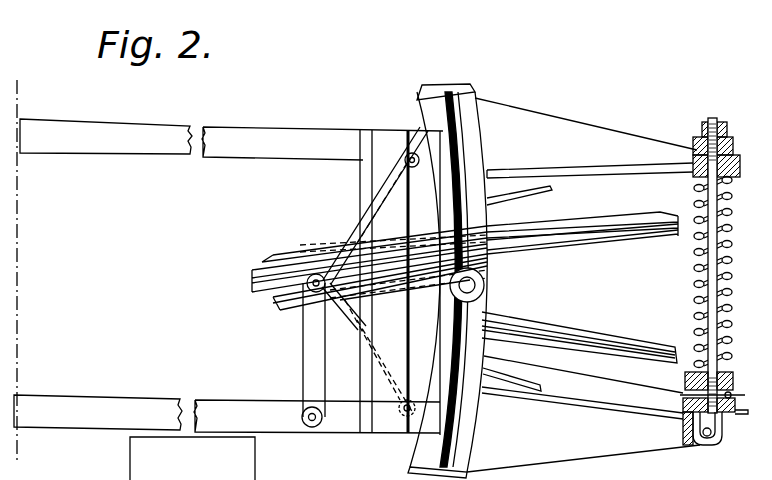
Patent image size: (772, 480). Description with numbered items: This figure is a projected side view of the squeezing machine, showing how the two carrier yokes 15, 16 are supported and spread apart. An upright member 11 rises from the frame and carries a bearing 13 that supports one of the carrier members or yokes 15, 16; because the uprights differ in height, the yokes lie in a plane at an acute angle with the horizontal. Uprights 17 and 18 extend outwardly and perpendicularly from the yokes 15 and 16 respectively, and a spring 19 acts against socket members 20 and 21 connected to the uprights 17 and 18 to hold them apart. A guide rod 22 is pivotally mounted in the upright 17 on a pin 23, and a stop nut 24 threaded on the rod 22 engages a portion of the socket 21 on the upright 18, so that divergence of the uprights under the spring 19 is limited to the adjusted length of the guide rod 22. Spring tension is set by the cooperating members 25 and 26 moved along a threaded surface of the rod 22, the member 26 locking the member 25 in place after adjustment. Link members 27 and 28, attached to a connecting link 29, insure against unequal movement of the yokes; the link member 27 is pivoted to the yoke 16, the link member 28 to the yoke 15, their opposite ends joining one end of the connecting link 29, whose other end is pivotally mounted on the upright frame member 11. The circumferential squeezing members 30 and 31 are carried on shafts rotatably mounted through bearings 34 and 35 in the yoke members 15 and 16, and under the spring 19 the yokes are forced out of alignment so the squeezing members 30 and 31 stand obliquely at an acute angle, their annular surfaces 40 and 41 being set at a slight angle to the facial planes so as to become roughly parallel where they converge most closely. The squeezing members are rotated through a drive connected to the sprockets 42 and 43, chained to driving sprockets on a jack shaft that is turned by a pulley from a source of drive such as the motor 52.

The upright member 11 is at (236, 126).
The bearing 13 is at (485, 285).
The yoke 15 is at (480, 398).
The yoke 16 is at (474, 192).
The upright 17 is at (583, 445).
The upright 18 is at (604, 138).
The spring 19 is at (727, 258).
The socket member 20 is at (731, 380).
The socket member 21 is at (738, 176).
The guide rod 22 is at (712, 238).
The pin 23 is at (706, 446).
The stop nut 24 is at (727, 133).
The adjusting member 25 is at (683, 393).
The locking member 26 is at (746, 416).
The link member 27 is at (346, 225).
The link member 28 is at (340, 325).
The connecting link 29 is at (302, 372).
The squeezing member 30 is at (566, 344).
The squeezing member 31 is at (603, 233).
The bearing 34 is at (463, 445).
The bearing 35 is at (464, 126).
The annular surface 40 is at (660, 350).
The annular surface 41 is at (655, 241).
The sprocket 42 is at (542, 386).
The sprocket 43 is at (550, 192).
The motor 52 is at (132, 470).